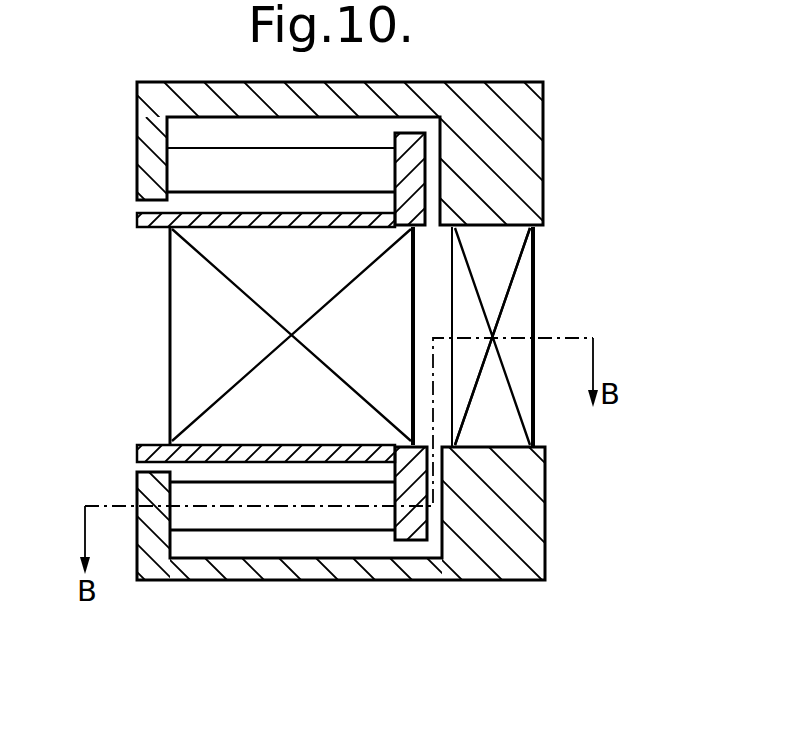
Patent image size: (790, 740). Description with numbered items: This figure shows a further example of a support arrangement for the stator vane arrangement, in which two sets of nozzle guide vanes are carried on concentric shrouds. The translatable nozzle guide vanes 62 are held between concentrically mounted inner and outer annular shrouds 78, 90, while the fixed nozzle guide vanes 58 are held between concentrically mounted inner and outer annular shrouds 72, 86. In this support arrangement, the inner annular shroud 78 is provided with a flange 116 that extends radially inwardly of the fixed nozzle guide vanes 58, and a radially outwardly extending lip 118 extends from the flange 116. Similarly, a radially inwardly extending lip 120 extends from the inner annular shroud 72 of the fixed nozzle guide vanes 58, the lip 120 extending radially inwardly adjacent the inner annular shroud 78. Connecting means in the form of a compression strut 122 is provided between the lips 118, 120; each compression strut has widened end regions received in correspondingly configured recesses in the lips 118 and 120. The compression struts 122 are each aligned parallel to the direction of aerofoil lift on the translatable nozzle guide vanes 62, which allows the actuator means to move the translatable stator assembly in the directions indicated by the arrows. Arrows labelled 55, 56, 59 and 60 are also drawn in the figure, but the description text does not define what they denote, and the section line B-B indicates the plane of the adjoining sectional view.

The outer annular shroud 90 is at (524, 139).
The outer annular shroud 86 is at (140, 221).
The fixed nozzle guide vanes 58 is at (190, 262).
The magnetic gap 56 is at (185, 327).
The actuator member 55 is at (185, 377).
The inner annular shroud 72 is at (140, 452).
The translatable nozzle guide vanes 62 is at (528, 257).
The air gap 60 is at (560, 299).
The coil winding 59 is at (540, 428).
The inner annular shroud 78 is at (544, 540).
The radially outwardly extending lip 118 is at (155, 538).
The compression strut 122 is at (233, 517).
The flange 116 is at (323, 570).
The radially inwardly extending lip 120 is at (412, 530).